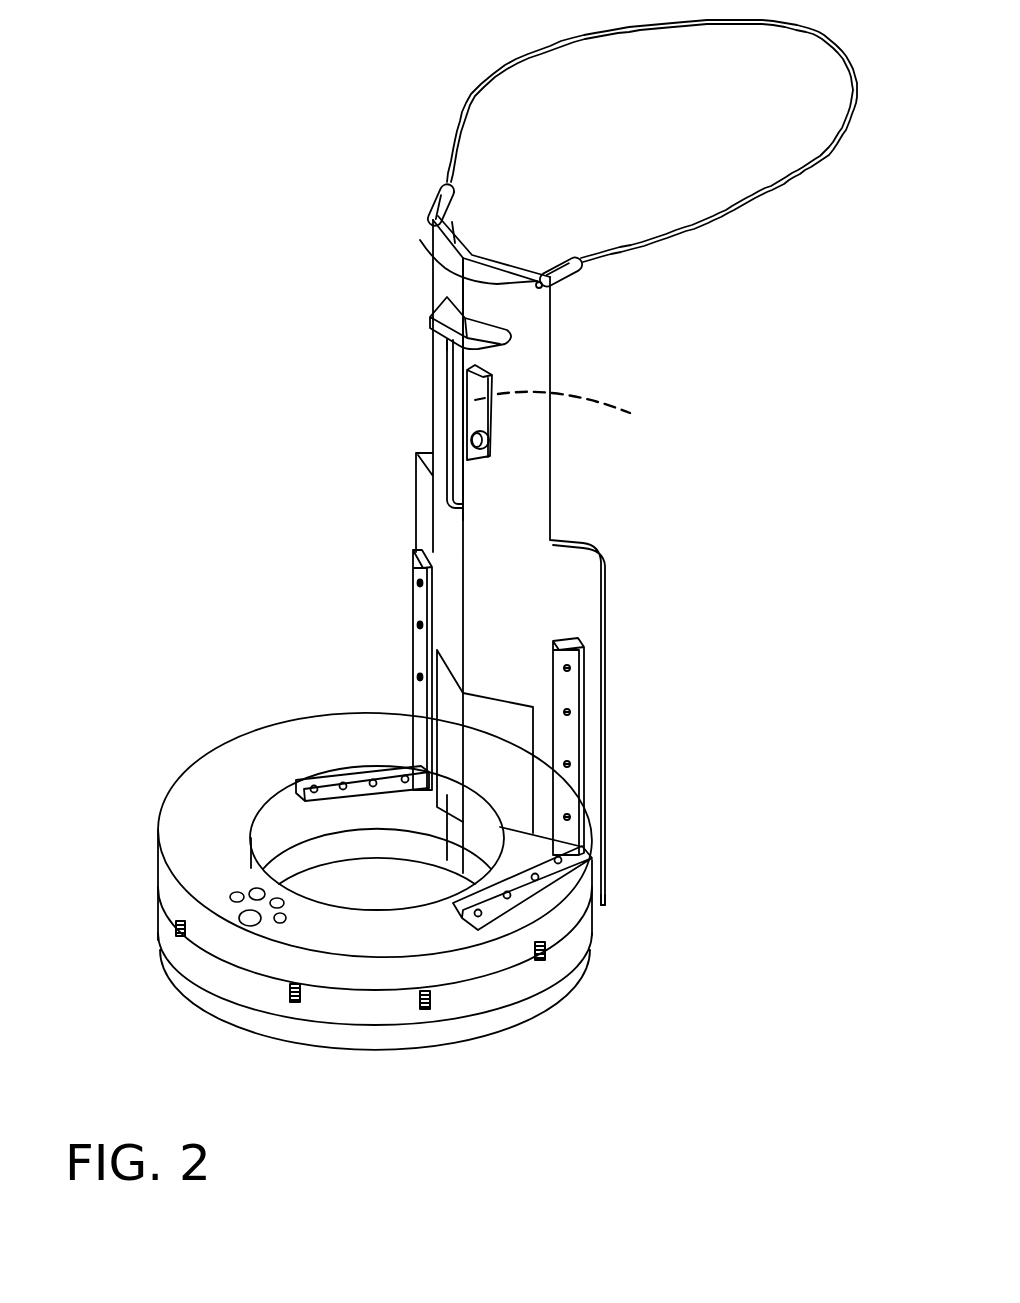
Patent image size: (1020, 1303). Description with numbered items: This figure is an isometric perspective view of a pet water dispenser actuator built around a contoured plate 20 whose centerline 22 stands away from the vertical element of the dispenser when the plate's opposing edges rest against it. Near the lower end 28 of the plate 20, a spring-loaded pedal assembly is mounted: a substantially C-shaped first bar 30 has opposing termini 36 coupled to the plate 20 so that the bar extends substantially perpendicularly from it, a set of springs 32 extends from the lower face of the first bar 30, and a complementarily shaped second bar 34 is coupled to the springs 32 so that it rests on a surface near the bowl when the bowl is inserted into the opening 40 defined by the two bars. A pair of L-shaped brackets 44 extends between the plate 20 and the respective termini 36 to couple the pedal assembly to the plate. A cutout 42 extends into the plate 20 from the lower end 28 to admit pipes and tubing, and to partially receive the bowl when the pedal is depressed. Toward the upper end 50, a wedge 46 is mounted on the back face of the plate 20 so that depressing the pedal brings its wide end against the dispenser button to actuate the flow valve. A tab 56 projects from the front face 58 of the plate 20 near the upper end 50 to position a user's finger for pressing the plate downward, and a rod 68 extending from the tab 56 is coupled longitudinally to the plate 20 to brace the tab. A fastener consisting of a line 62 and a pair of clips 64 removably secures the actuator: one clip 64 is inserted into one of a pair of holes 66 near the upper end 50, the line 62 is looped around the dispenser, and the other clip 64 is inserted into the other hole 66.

The plate 20 is at (530, 540).
The centerline 22 is at (463, 530).
The lower end 28 is at (600, 913).
The first bar 30 is at (208, 790).
The springs 32 is at (423, 1090).
The second bar 34 is at (200, 988).
The opposing termini 36 is at (453, 770).
The opening 40 is at (360, 887).
The cutout 42 is at (493, 740).
The brackets 44 is at (578, 672).
The wedge 46 is at (630, 413).
The upper end 50 is at (447, 188).
The tab 56 is at (438, 316).
The front face 58 is at (485, 503).
The line 62 is at (811, 38).
The clips 64 is at (563, 262).
The holes 66 is at (420, 240).
The rod 68 is at (452, 362).